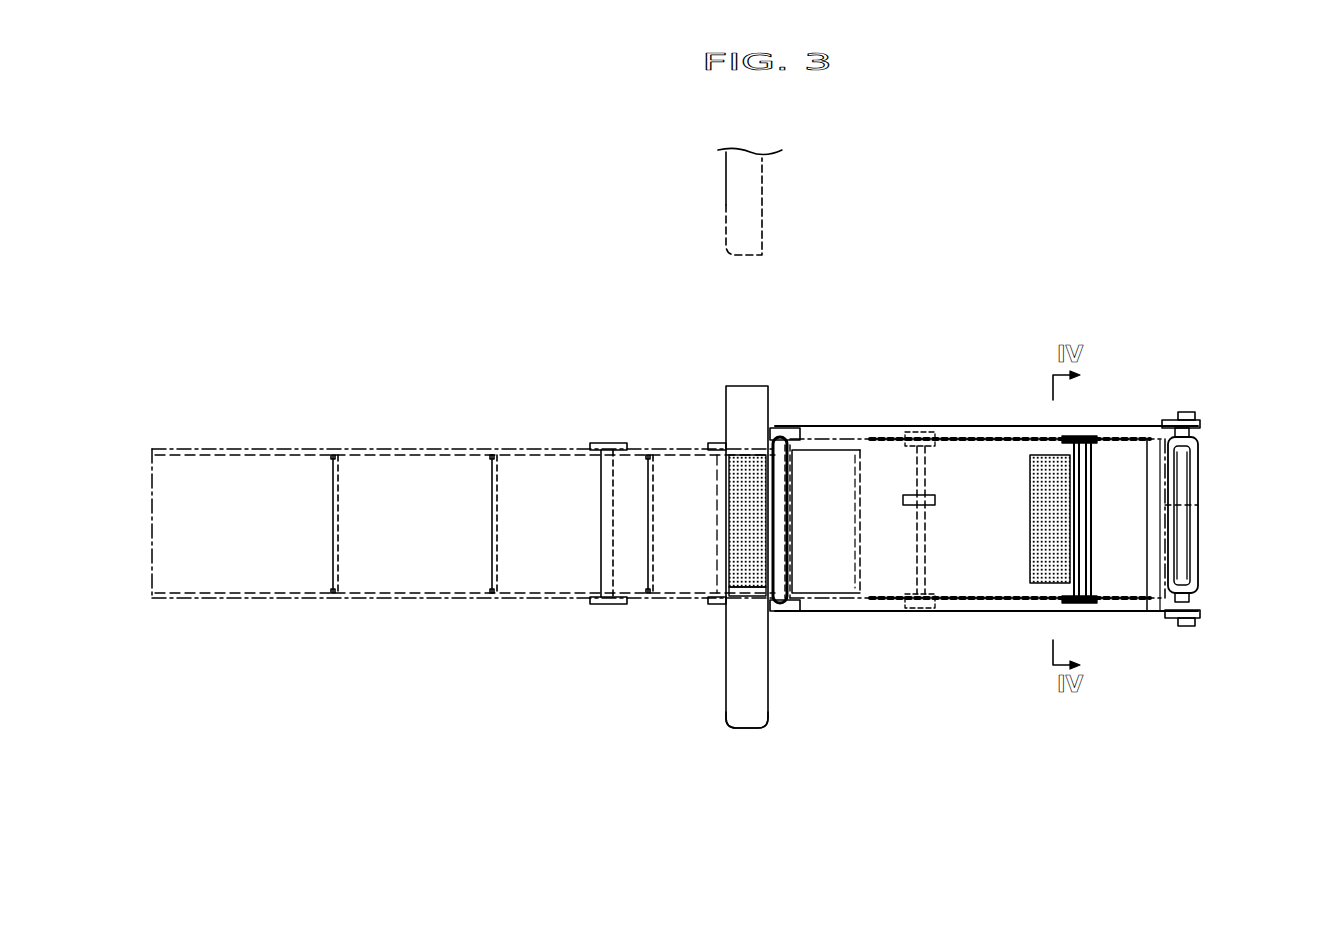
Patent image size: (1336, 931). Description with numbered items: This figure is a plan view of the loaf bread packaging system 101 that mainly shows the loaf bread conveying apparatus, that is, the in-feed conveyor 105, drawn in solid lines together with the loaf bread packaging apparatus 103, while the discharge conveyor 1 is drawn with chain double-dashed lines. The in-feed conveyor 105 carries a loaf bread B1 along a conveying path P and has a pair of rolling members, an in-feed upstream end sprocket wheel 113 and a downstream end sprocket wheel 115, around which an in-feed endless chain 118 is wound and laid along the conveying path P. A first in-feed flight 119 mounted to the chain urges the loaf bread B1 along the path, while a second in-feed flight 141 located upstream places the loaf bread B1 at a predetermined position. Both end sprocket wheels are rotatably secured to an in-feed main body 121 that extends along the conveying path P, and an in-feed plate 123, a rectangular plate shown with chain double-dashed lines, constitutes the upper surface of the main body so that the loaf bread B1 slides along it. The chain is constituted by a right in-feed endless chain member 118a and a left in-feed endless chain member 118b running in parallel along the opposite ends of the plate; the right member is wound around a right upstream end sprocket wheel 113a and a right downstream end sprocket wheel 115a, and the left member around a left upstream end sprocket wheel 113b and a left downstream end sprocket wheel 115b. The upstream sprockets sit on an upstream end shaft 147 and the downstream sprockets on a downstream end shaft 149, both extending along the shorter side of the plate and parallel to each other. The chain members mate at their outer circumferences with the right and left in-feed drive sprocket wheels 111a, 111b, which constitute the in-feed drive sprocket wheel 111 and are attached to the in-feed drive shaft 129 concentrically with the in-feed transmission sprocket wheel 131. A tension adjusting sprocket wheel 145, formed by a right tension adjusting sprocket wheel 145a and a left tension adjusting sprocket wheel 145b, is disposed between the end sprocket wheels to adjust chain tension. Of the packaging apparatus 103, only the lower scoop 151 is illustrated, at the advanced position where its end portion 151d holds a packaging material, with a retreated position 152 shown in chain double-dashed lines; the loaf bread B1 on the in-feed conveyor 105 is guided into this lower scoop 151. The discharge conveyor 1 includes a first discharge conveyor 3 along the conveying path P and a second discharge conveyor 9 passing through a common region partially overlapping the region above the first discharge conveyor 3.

The discharge conveyor 1 is at (503, 639).
The first discharge conveyor 3 is at (453, 443).
The second discharge conveyor 9 is at (708, 600).
The loaf bread packaging system 101 is at (797, 238).
The loaf bread packaging apparatus 103 is at (776, 634).
The in-feed conveyor 105 is at (1142, 271).
The in-feed drive sprocket wheel 111 is at (958, 441).
The right in-feed drive sprocket wheel 111a is at (946, 440).
The left in-feed drive sprocket wheel 111b is at (985, 440).
The in-feed upstream end sprocket wheel 113 is at (1244, 419).
The right upstream end sprocket wheel 113a is at (1178, 437).
The left upstream end sprocket wheel 113b is at (1200, 592).
The in-feed downstream end sprocket wheel 115 is at (843, 422).
The right downstream end sprocket wheel 115a is at (774, 432).
The left downstream end sprocket wheel 115b is at (800, 598).
The in-feed endless chain 118 is at (1148, 617).
The right in-feed endless chain member 118a is at (1137, 612).
The left in-feed endless chain member 118b is at (1148, 612).
The first in-feed flight 119 is at (1075, 478).
The in-feed main body 121 is at (1160, 612).
The in-feed plate 123 is at (1143, 514).
The in-feed drive shaft 129 is at (942, 604).
The in-feed transmission sprocket wheel 131 is at (918, 612).
The second in-feed flight 141 is at (1087, 520).
The tension adjusting sprocket wheel 145 is at (1010, 497).
The right tension adjusting sprocket wheel 145a is at (1025, 440).
The left tension adjusting sprocket wheel 145b is at (1100, 617).
The upstream end shaft 147 is at (1172, 420).
The downstream end shaft 149 is at (790, 500).
The lower scoop 151 is at (744, 660).
The end portion 151d is at (743, 716).
The retreated position 152 is at (732, 184).
The loaf bread B1 is at (752, 461).
The conveying path P is at (876, 565).